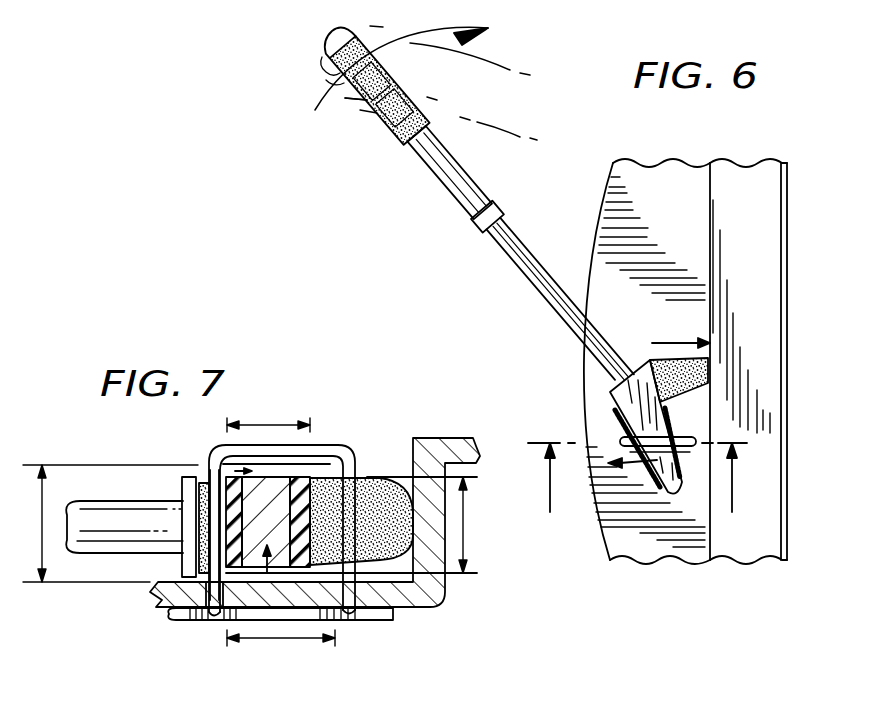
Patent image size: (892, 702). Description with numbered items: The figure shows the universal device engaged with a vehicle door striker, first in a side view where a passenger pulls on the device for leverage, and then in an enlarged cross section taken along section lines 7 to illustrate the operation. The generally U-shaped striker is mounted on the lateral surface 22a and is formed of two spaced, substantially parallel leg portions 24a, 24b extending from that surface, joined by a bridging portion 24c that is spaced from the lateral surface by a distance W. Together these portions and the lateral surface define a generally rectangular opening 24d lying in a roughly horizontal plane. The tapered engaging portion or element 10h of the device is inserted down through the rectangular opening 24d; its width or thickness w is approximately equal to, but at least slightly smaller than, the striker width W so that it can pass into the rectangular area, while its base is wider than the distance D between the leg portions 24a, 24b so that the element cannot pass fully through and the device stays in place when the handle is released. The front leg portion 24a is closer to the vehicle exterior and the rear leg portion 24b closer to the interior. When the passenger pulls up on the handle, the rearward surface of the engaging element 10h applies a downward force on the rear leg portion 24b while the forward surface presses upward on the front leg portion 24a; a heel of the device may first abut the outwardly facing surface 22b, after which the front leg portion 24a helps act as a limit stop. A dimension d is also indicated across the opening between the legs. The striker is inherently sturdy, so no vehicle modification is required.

In FIG. 6, the lateral surface 22a is at (615, 245).
In FIG. 7, the lateral surface 22a is at (393, 572).
In FIG. 6, the outwardly facing surface 22b is at (705, 168).
In FIG. 6, the section lines 7- 7 is at (637, 496).
In FIG. 7, the front leg portion 24a is at (183, 615).
In FIG. 7, the rear leg portion 24b is at (343, 503).
In FIG. 7, the bridging portion 24c is at (330, 420).
In FIG. 7, the rectangular opening 24d is at (221, 462).
In FIG. 7, the engaging portion or element 10h is at (218, 618).
In FIG. 7, the inner spacing dimension d is at (267, 425).
In FIG. 7, the distance between leg portions D is at (300, 640).
In FIG. 7, the striker width or depth W is at (53, 573).
In FIG. 7, the engaging element width or thickness w is at (466, 533).